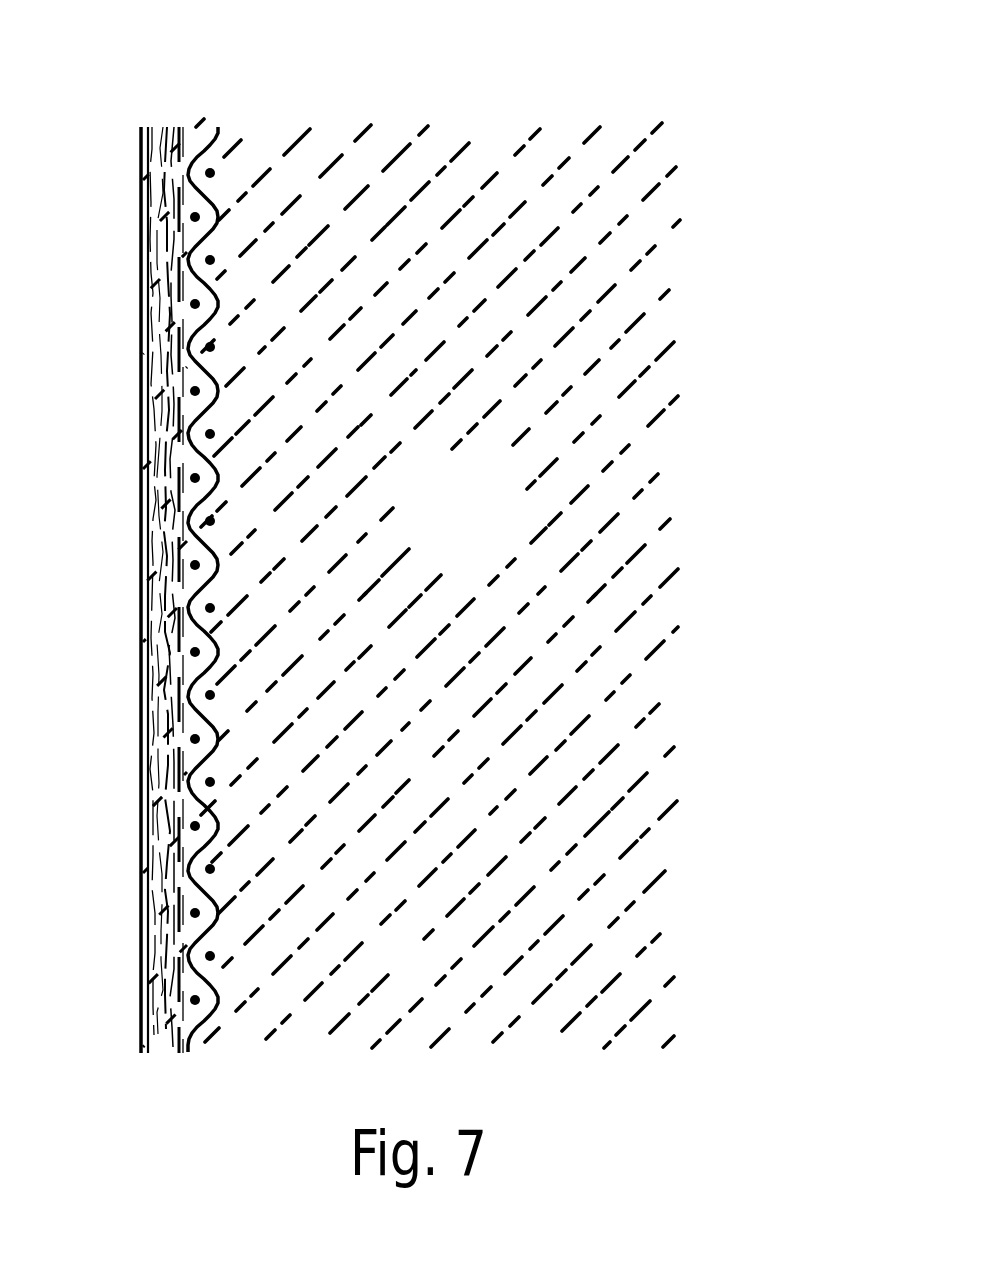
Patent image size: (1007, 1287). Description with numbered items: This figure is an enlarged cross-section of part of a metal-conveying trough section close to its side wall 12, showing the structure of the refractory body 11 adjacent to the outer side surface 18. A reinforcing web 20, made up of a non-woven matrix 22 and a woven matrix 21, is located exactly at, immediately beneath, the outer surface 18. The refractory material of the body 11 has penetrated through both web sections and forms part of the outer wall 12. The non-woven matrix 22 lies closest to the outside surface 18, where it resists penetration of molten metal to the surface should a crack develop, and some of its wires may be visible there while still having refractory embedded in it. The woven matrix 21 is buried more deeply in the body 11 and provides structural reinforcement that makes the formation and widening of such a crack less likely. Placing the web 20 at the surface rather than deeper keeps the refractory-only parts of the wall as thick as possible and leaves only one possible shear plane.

The body 11 is at (476, 527).
The side wall 12 is at (140, 370).
The outer side surface 18 is at (135, 660).
The reinforcing web 20 is at (207, 1077).
The woven matrix 21 is at (210, 131).
The non-woven matrix 22 is at (163, 130).